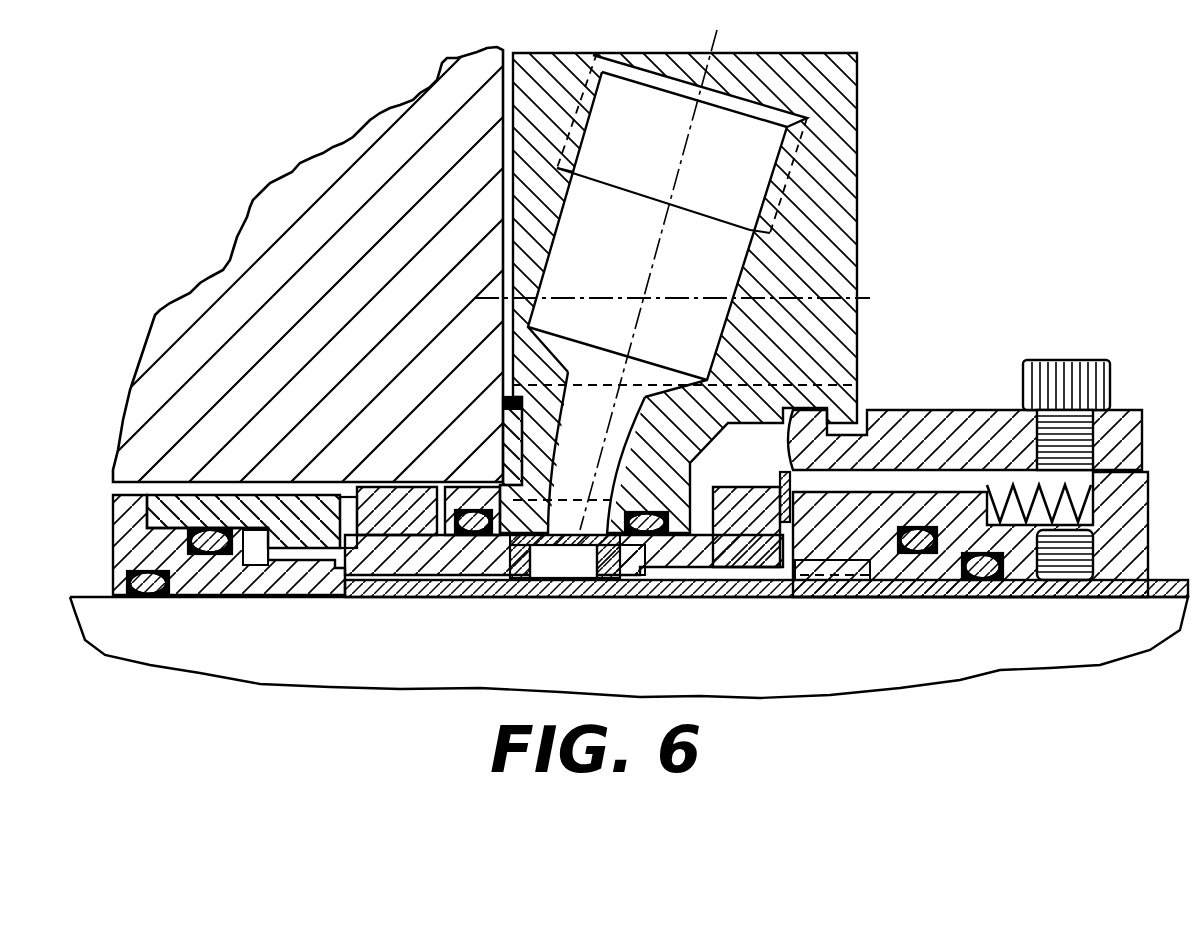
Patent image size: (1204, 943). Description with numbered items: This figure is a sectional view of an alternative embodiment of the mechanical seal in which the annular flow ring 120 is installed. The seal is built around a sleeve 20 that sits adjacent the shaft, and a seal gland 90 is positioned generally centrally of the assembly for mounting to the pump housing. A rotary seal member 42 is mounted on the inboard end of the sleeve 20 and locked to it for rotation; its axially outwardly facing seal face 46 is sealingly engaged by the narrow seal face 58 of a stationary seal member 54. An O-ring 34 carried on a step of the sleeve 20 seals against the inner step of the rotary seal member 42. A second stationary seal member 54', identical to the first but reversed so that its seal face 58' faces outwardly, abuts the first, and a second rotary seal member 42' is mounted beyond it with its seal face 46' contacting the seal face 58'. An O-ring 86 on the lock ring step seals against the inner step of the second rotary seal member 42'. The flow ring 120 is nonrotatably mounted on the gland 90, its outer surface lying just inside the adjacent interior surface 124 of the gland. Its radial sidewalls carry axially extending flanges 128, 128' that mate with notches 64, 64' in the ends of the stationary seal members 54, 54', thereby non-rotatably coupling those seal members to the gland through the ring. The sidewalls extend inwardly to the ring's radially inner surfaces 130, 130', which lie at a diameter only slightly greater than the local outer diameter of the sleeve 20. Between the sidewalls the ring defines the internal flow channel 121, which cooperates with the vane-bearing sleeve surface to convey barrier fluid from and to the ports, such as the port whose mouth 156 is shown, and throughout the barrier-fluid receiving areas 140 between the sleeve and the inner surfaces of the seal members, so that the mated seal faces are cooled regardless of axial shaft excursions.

The sleeve 20 is at (662, 687).
The O-ring 34 is at (200, 560).
The rotary seal member 42 is at (243, 492).
The second rotary seal member 42' is at (965, 442).
The seal face 46 is at (362, 492).
The seal face 46' is at (770, 488).
The stationary seal member 54 is at (428, 486).
The second stationary seal member 54' is at (745, 504).
The seal face 58 is at (229, 516).
The seal face 58' is at (966, 561).
The notch 64 is at (466, 577).
The notch 64' is at (673, 573).
The O-ring 86 is at (920, 582).
The seal gland 90 is at (858, 218).
The annular flow ring 120 is at (505, 478).
The flow channel 121 is at (575, 578).
The interior surface of gland 124 is at (598, 490).
The flange 128 is at (564, 601).
The flange 128' is at (651, 595).
The radially inner surface 130 is at (535, 595).
The radially inner surface 130' is at (617, 595).
The barrier-fluid receiving areas 140 is at (250, 556).
The port mouth 156 is at (503, 405).